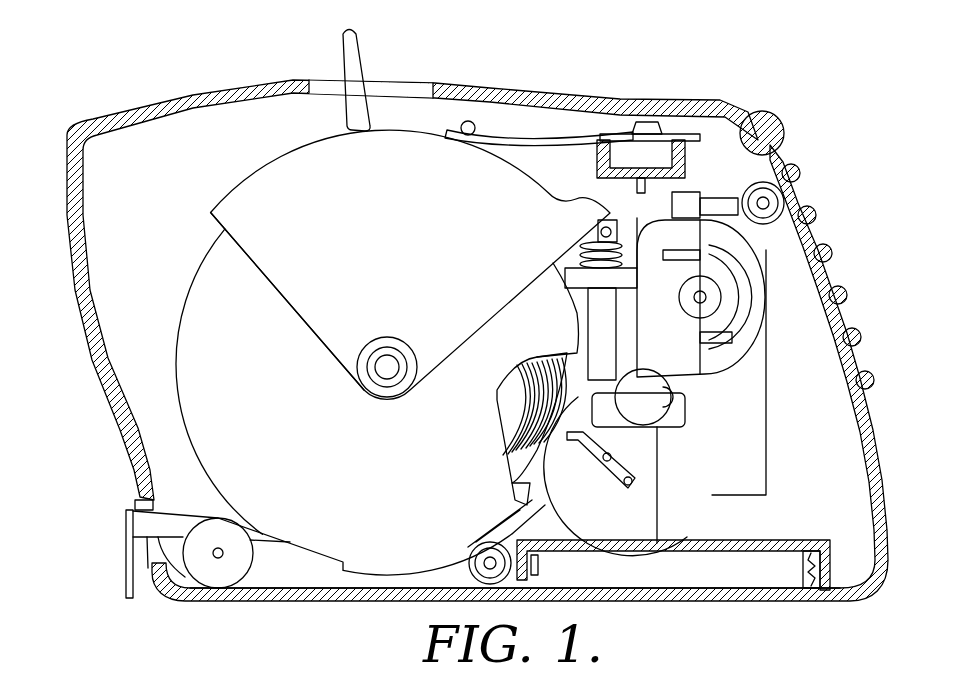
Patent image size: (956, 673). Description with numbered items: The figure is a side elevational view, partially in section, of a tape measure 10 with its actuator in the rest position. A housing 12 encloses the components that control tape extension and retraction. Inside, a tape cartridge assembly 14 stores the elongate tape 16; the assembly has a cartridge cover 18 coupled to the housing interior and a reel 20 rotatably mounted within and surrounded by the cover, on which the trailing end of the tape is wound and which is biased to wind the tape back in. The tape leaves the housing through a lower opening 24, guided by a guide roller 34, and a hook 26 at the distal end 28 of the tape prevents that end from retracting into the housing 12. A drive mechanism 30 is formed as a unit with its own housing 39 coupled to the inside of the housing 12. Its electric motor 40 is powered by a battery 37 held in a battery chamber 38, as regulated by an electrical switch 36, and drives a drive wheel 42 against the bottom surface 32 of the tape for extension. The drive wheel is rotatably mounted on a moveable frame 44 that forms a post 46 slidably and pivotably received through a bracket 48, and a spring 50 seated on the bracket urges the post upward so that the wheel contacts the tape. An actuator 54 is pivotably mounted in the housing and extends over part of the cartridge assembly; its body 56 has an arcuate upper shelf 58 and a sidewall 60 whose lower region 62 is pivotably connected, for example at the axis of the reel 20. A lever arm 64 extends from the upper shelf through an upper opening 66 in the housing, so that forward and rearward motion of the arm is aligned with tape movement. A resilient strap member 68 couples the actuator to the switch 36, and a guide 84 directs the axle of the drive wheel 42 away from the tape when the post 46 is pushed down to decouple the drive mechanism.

The tape measure 10 is at (649, 50).
The housing 12 is at (81, 135).
The tape cartridge assembly 14 is at (190, 278).
The elongate tape 16 is at (519, 507).
The cartridge cover 18 is at (180, 353).
The reel 20 is at (499, 410).
The lower opening 24 is at (152, 595).
The hook 26 is at (130, 585).
The distal end 28 is at (139, 507).
The drive mechanism 30 is at (794, 370).
The bottom surface 32 is at (285, 549).
The guide roller 34 is at (243, 575).
The electrical switch 36 is at (715, 149).
The battery 37 is at (733, 602).
The battery chamber 38 is at (780, 549).
The housing 39 is at (771, 433).
The electric motor 40 is at (725, 295).
The drive wheel 42 is at (558, 451).
The moveable frame 44 is at (636, 330).
The post 46 is at (588, 323).
The bracket 48 is at (632, 268).
The spring 50 is at (582, 252).
The actuator 54 is at (211, 166).
The body 56 is at (202, 208).
The arcuate upper shelf 58 is at (266, 168).
The sidewall 60 is at (281, 279).
The lower region 62 is at (342, 392).
The lever arm 64 is at (360, 41).
The upper opening 66 is at (436, 82).
The resilient strap member 68 is at (587, 126).
The guide 84 is at (631, 487).